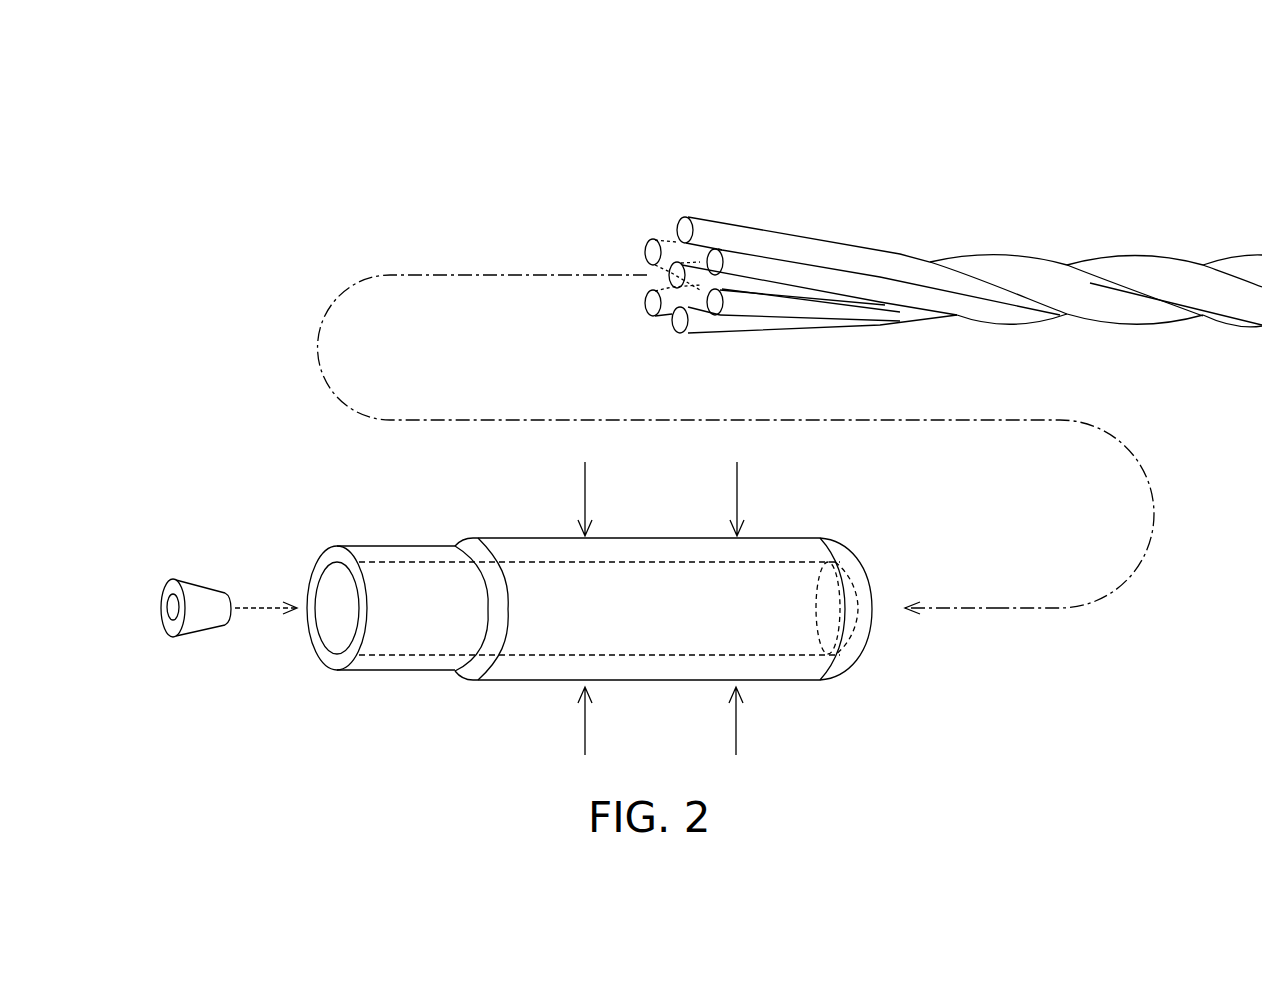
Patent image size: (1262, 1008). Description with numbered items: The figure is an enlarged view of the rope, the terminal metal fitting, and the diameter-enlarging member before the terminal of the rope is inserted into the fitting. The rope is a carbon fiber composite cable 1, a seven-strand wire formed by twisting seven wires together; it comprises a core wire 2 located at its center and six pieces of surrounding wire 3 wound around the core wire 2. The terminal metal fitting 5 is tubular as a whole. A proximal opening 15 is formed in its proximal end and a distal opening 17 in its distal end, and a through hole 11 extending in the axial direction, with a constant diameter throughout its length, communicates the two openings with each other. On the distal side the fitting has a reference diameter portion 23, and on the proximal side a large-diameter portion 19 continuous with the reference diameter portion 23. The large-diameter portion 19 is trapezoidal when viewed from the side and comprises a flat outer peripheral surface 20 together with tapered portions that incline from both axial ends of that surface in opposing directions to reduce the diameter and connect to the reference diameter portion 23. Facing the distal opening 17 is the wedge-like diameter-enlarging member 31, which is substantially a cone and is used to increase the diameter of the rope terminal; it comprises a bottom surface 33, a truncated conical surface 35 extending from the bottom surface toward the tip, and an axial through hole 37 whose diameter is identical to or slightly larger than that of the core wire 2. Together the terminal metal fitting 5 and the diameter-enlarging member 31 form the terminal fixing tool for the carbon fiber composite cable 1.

The carbon fiber composite cable 1 is at (715, 210).
The core wire 2 is at (670, 262).
The surrounding wire 3 is at (780, 242).
The terminal metal fitting 5 is at (532, 530).
The through hole 11 is at (337, 632).
The proximal opening 15 is at (870, 573).
The distal opening 17 is at (337, 580).
The large-diameter portion 19 is at (672, 536).
The flat outer peripheral surface 20 is at (615, 536).
The reference diameter portion 23 is at (407, 545).
The diameter-enlarging member 31 is at (196, 582).
The bottom surface 33 is at (172, 630).
The truncated conical surface 35 is at (210, 598).
The through hole 37 is at (164, 598).